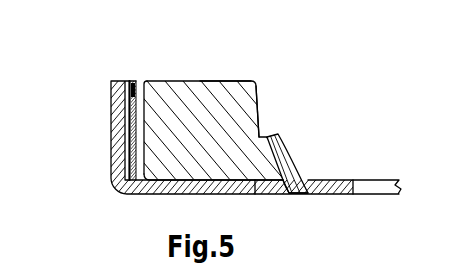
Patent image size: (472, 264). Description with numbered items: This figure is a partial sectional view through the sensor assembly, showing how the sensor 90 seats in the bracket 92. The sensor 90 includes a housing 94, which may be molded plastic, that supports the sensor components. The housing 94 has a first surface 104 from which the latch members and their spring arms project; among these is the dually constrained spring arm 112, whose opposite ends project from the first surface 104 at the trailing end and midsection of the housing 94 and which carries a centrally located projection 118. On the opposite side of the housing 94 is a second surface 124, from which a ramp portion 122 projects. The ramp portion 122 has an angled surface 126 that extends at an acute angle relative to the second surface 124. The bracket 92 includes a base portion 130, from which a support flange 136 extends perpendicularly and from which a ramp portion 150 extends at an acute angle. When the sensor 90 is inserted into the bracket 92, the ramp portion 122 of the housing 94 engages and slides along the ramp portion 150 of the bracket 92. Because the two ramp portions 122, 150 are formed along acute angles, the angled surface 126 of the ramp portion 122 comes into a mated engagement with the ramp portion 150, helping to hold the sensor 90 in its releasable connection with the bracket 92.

The sensor 90 is at (189, 110).
The bracket 92 is at (111, 157).
The housing 94 is at (222, 111).
The first surface 104 is at (141, 131).
The dually constrained spring arm 112 is at (134, 92).
The centrally located projection 118 is at (130, 107).
The ramp portion 122 is at (271, 173).
The second surface 124 is at (258, 107).
The angled surface 126 is at (259, 136).
The base portion 130 is at (173, 185).
The support flange 136 is at (128, 116).
The ramp portion 150 is at (284, 157).